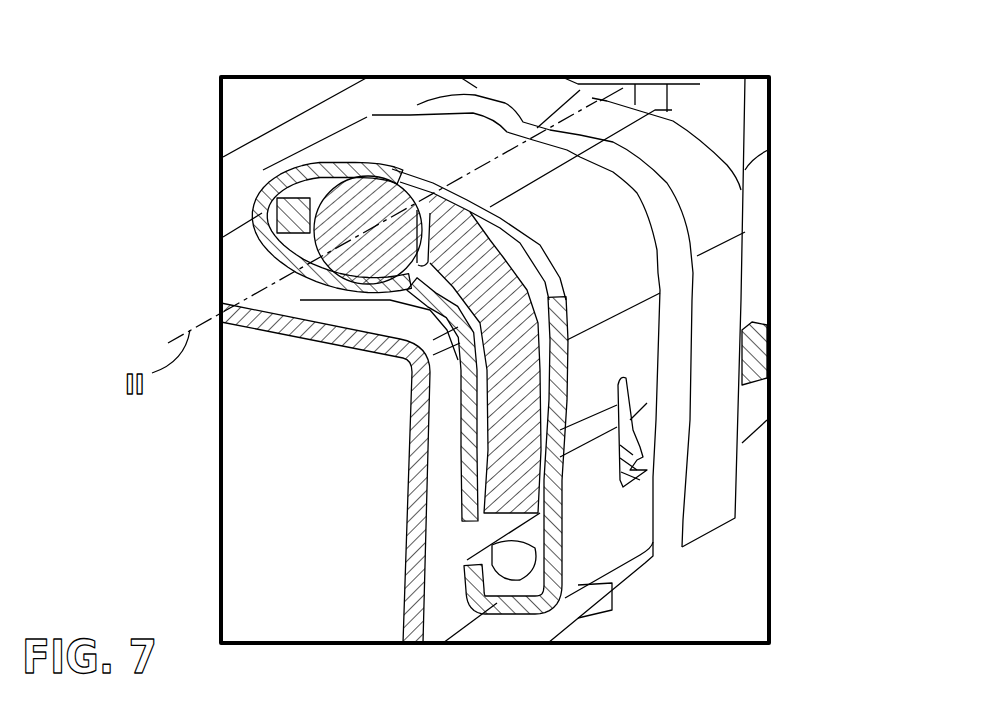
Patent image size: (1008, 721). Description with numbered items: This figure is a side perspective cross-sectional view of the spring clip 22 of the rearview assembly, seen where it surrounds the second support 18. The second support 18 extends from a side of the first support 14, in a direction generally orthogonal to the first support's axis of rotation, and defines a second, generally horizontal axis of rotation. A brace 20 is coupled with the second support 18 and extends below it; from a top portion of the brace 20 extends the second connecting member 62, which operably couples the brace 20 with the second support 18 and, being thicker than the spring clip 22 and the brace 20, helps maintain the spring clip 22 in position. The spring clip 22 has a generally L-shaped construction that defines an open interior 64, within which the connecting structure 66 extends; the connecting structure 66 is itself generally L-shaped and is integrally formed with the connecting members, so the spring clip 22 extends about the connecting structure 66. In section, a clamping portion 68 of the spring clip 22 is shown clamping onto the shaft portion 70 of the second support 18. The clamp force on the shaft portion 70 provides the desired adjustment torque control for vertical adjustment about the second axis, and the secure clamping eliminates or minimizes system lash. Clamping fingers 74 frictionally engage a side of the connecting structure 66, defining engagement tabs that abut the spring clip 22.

The first support 14 is at (753, 108).
The second support 18 is at (300, 263).
The brace 20 is at (707, 613).
The spring clip 22 is at (593, 290).
The second connecting member 62 is at (707, 197).
The open interior 64 is at (553, 270).
The connecting structure 66 is at (513, 403).
The clamping portion 68 is at (427, 185).
The shaft portion 70 is at (357, 262).
The clamping fingers 74 is at (633, 460).